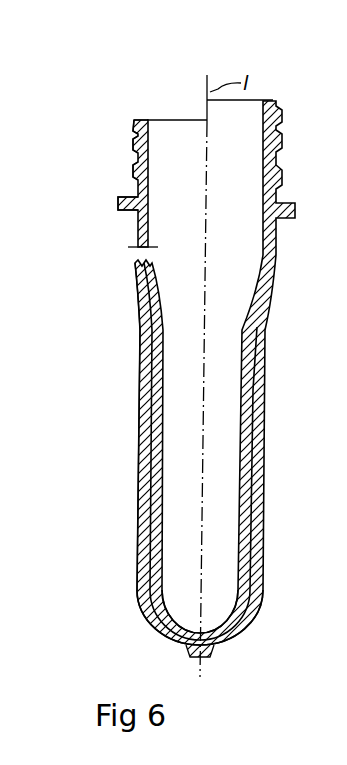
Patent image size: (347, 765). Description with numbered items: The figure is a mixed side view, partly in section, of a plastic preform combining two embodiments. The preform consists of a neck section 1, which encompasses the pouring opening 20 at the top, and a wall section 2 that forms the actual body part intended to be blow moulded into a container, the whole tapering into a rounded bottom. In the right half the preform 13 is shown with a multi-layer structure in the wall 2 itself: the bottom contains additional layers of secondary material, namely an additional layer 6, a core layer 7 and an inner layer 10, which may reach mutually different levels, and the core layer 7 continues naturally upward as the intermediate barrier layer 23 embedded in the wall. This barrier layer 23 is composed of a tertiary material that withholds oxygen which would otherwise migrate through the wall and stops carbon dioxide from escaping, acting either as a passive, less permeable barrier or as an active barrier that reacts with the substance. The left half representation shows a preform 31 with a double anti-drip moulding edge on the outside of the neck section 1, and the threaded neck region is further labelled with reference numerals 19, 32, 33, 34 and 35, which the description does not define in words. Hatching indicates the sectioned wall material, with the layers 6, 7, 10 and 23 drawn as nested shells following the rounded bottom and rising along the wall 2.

The neck section 1 is at (134, 222).
The wall section 2 is at (140, 297).
The additional layer 6 is at (263, 603).
The additional core layer 7 is at (254, 602).
The inner layer 10 is at (167, 617).
The preform 13 is at (266, 94).
The inner layer (right) 19 is at (258, 354).
The pouring opening 20 is at (176, 118).
The barrier layer 23 is at (155, 329).
The preform 31 is at (147, 112).
The first thread 32 is at (134, 125).
The third thread 33 is at (136, 144).
The second thread 34 is at (137, 137).
The support ring 35 is at (126, 181).